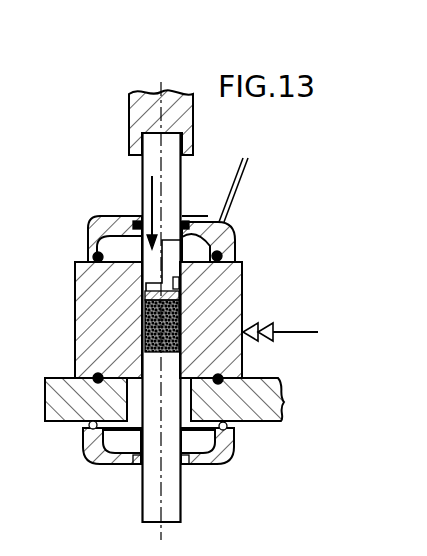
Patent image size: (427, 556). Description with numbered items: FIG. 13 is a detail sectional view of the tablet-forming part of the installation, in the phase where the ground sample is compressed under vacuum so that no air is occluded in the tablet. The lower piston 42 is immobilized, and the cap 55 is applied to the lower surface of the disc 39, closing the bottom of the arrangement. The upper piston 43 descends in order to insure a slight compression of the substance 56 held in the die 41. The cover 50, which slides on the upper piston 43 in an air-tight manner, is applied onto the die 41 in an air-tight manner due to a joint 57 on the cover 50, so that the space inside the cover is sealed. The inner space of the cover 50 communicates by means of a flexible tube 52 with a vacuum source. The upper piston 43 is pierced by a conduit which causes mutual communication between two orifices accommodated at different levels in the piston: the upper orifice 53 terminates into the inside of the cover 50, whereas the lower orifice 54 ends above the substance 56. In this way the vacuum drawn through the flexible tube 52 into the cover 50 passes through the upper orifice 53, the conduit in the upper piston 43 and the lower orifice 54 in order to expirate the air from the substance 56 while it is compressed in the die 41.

The disc 39 is at (264, 416).
The die 41 is at (228, 298).
The lower piston 42 is at (170, 505).
The upper piston 43 is at (150, 168).
The cover 50 is at (88, 228).
The flexible tube 52 is at (246, 176).
The upper orifice 53 is at (208, 240).
The lower orifice 54 is at (146, 283).
The cap 55 is at (88, 455).
The substance 56 is at (146, 325).
The joint 57 is at (93, 256).